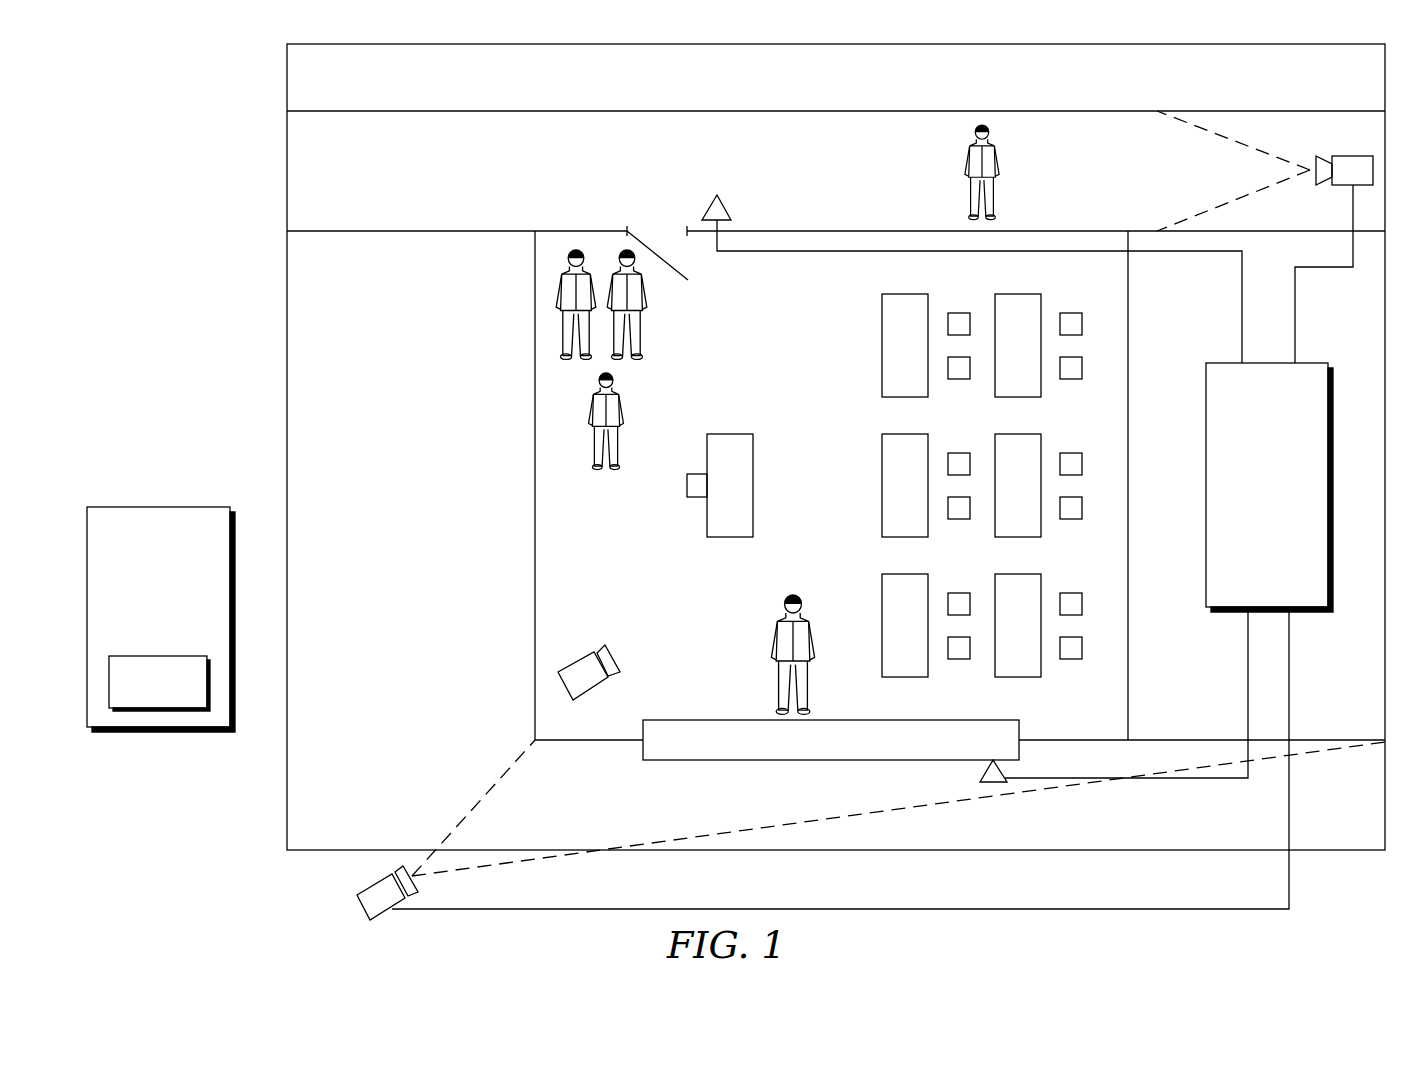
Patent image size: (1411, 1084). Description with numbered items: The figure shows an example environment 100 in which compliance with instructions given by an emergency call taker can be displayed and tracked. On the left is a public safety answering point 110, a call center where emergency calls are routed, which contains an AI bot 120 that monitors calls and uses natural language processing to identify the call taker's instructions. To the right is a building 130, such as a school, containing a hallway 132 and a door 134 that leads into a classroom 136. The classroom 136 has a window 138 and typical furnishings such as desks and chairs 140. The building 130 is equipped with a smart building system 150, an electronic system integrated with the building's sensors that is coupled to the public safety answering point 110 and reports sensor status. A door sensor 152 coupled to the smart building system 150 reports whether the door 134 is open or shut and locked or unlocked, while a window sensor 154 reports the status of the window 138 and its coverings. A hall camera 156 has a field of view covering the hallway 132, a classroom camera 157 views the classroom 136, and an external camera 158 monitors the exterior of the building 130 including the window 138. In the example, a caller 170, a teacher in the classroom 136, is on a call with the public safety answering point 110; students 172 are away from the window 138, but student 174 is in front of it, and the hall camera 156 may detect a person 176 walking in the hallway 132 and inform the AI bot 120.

The environment 100 is at (93, 67).
The public safety answering point 110 is at (157, 507).
The AI bot 120 is at (162, 708).
The building 130 is at (257, 133).
The hallway 132 is at (618, 150).
The door 134 is at (658, 226).
The classroom 136 is at (556, 495).
The window 138 is at (713, 761).
The desks and chairs 140 is at (882, 487).
The smart building system 150 is at (1300, 613).
The door sensor 152 is at (723, 207).
The window sensor 154 is at (995, 786).
The hall camera 156 is at (1353, 156).
The classroom camera 157 is at (558, 673).
The external camera 158 is at (357, 887).
The caller 170 is at (621, 407).
The students 172 is at (565, 327).
The student 174 is at (775, 632).
The person 176 is at (996, 157).